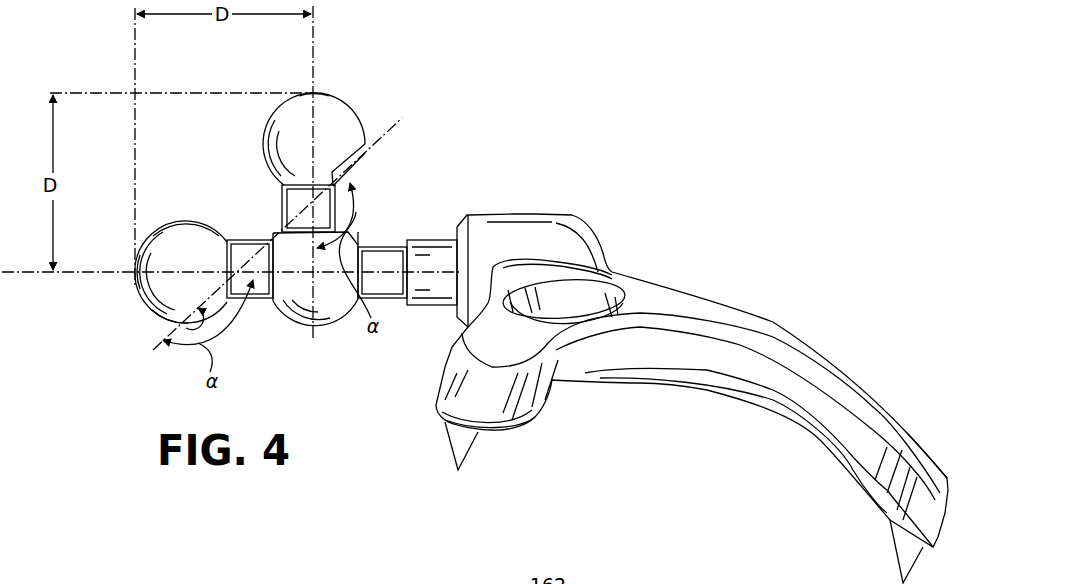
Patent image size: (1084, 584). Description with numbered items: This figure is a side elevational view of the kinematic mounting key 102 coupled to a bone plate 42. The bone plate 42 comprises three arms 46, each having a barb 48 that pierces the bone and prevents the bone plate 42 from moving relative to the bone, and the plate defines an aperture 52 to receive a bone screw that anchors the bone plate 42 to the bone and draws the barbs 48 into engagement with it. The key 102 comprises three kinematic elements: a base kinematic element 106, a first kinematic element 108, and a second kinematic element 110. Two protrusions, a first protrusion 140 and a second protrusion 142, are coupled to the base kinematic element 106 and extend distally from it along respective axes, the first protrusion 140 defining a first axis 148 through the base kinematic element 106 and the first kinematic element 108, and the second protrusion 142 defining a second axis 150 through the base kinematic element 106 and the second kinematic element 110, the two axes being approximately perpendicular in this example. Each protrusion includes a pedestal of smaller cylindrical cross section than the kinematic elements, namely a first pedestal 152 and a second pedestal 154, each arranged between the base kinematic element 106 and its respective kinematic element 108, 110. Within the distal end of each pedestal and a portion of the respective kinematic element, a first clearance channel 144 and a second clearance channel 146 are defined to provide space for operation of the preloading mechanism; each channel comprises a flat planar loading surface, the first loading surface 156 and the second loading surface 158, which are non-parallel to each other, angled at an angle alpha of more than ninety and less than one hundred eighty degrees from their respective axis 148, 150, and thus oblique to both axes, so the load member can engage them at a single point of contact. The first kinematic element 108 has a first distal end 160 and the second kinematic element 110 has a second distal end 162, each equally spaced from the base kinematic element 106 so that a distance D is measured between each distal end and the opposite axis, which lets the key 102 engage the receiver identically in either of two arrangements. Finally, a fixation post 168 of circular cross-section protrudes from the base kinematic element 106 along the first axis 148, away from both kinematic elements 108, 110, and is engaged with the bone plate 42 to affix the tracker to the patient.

The bone plate 42 is at (756, 266).
The arm 46 is at (542, 413).
The barb 48 is at (458, 437).
The aperture 52 is at (598, 297).
The kinematic mounting key 102 is at (62, 58).
The base kinematic element 106 is at (350, 315).
The first kinematic element 108 is at (150, 312).
The second kinematic element 110 is at (362, 118).
The first protrusion 140 is at (178, 203).
The second protrusion 142 is at (254, 182).
The first clearance channel 144 is at (232, 334).
The second clearance channel 146 is at (383, 187).
The first axis 148 is at (97, 278).
The second axis 150 is at (314, 48).
The first pedestal 152 is at (262, 241).
The second pedestal 154 is at (280, 200).
The first loading surface 156 is at (163, 322).
The second loading surface 158 is at (354, 162).
The first distal end 160 is at (131, 271).
The second distal end 162 is at (318, 91).
The fixation post 168 is at (418, 308).